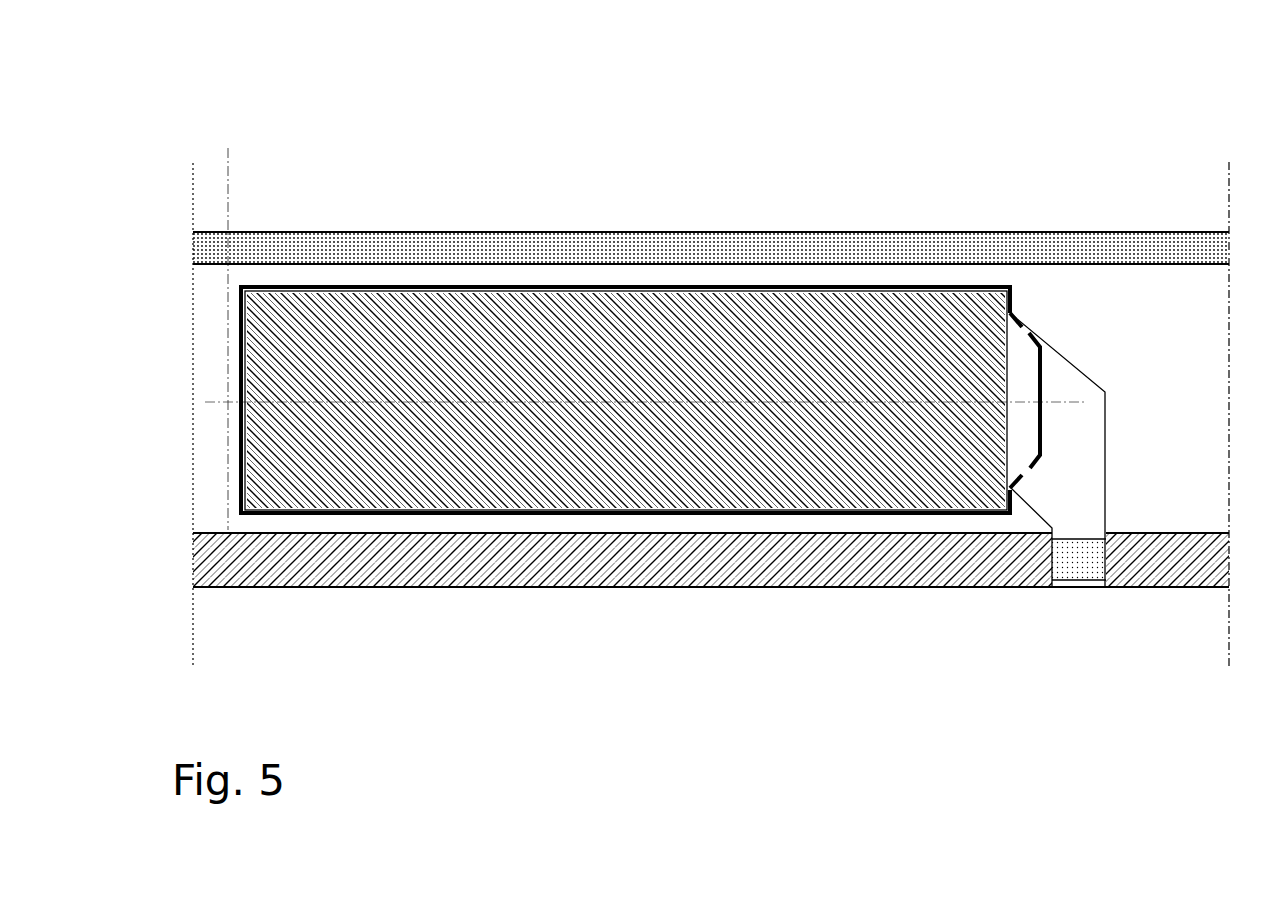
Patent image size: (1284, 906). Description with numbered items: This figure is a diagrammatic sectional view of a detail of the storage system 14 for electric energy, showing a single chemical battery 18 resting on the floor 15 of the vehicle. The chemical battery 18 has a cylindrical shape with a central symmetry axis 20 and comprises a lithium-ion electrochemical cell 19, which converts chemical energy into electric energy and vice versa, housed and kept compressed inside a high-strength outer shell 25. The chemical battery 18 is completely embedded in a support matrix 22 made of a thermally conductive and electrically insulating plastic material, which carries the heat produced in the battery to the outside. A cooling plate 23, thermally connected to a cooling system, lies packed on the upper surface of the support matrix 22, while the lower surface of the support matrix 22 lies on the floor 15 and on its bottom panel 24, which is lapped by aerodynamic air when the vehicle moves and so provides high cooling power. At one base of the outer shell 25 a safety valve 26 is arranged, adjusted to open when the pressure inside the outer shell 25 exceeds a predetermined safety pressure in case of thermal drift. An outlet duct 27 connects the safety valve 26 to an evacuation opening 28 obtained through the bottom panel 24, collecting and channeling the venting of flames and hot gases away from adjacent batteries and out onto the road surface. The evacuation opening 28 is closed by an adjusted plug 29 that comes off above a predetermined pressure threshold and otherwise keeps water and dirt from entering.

The storage system 14 is at (572, 105).
The floor 15 is at (498, 640).
The chemical battery 18 is at (490, 275).
The electrochemical cell 19 is at (410, 355).
The central symmetry axis 20 is at (228, 328).
The support matrix 22 is at (1188, 303).
The cooling plate 23 is at (628, 250).
The bottom panel 24 is at (622, 563).
The outer shell 25 is at (346, 285).
The safety valve 26 is at (1040, 347).
The outlet duct 27 is at (1092, 501).
The evacuation opening 28 is at (1067, 583).
The adjusted plug 29 is at (1094, 567).